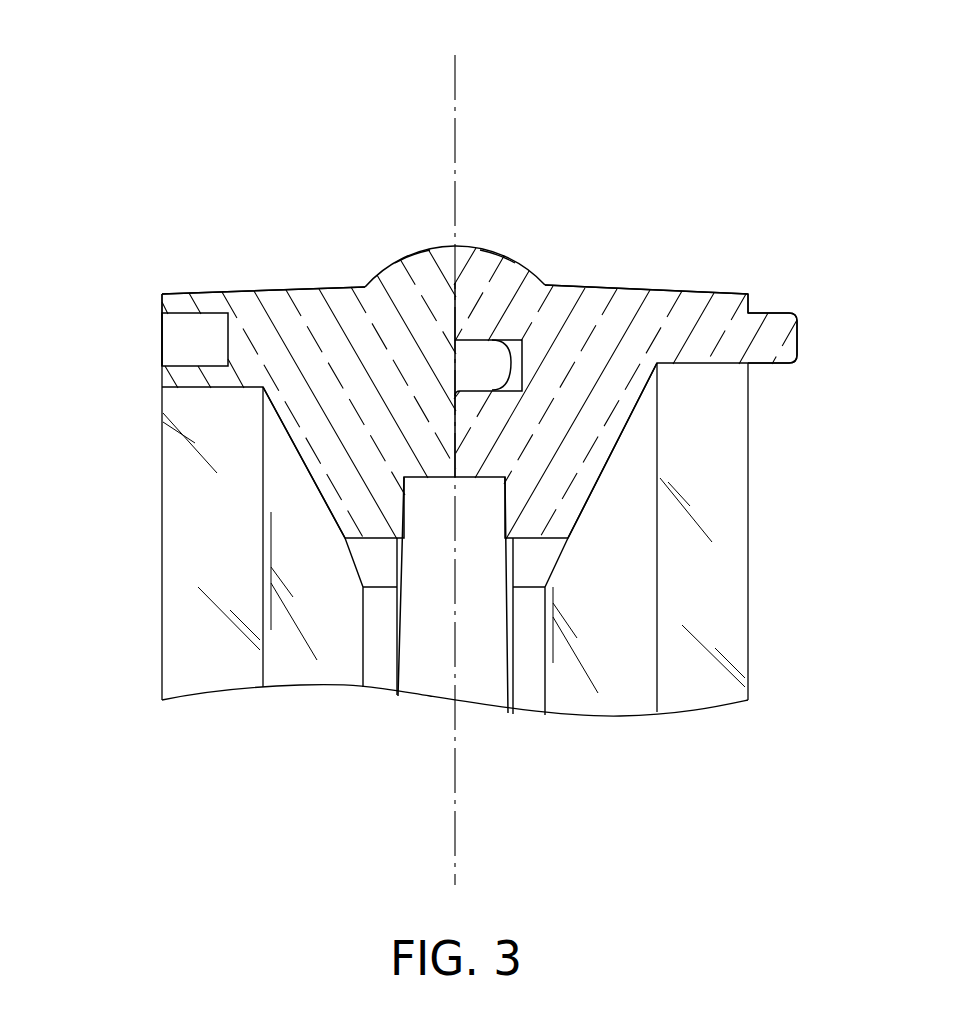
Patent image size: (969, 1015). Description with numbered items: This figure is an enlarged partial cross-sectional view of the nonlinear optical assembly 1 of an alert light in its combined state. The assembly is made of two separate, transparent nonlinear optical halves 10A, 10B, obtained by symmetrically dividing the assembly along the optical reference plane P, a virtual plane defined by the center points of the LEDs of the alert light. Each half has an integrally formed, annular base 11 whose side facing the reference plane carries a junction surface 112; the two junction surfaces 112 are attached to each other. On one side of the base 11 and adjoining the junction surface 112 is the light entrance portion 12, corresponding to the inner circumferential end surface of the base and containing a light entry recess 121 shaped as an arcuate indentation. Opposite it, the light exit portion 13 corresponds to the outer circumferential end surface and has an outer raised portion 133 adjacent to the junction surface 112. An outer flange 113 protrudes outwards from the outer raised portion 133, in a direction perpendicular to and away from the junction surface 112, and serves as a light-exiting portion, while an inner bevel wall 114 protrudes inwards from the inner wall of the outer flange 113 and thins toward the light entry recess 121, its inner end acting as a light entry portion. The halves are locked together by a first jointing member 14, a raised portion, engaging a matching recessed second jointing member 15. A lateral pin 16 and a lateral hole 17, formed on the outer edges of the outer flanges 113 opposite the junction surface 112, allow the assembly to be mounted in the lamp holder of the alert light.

The nonlinear optical assembly 1 is at (648, 152).
The nonlinear optical half 10A is at (700, 267).
The nonlinear optical half 10B is at (313, 267).
The base 11 is at (295, 285).
The junction surface 112 is at (455, 283).
The outer flange 113 is at (268, 315).
The light exit portion 13 is at (363, 287).
The outer raised portion 133 is at (406, 254).
The first jointing member 14 is at (488, 372).
The second jointing member 15 is at (505, 365).
The lateral pin 16 is at (197, 313).
The lateral hole 17 is at (782, 338).
The inner bevel wall 114 is at (345, 418).
The light entrance portion 12 is at (528, 595).
The light entry recess 121 is at (382, 567).
The optical reference plane P is at (455, 75).